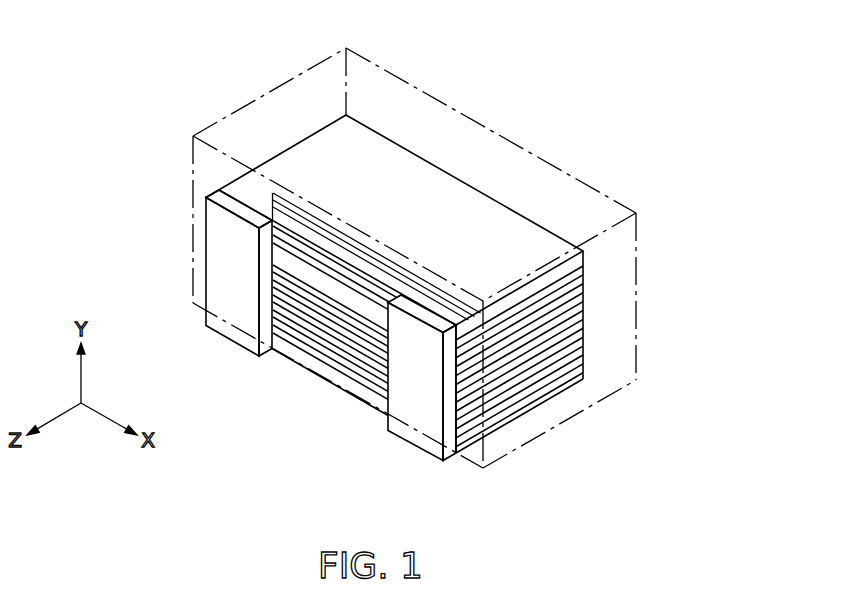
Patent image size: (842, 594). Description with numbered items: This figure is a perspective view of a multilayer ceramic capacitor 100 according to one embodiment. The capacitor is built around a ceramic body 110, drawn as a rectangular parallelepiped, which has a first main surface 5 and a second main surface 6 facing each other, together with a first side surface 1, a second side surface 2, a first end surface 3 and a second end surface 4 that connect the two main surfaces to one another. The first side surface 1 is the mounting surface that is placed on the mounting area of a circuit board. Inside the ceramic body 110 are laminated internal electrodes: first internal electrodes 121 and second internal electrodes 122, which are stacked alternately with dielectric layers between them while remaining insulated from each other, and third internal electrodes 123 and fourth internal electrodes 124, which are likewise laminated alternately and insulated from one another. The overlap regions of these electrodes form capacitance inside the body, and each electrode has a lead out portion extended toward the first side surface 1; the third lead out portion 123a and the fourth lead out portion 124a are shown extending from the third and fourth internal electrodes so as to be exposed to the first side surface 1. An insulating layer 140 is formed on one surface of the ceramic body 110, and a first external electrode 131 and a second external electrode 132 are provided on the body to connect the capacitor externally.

The multilayer ceramic capacitor 100 is at (70, 221).
The ceramic body 110 is at (482, 147).
The first side surface 1 is at (302, 346).
The second side surface 2 is at (522, 126).
The first end surface 3 is at (258, 95).
The second end surface 4 is at (619, 351).
The first main surface 5 is at (313, 92).
The second main surface 6 is at (562, 431).
The first internal electrode 121 is at (584, 304).
The second internal electrode 122 is at (584, 313).
The third internal electrode 123 is at (385, 160).
The third lead out portion 123a is at (245, 193).
The fourth internal electrode 124 is at (586, 266).
The fourth lead out portion 124a is at (454, 316).
The first external electrode 131 is at (233, 302).
The second external electrode 132 is at (418, 408).
The insulating layer 140 is at (317, 385).